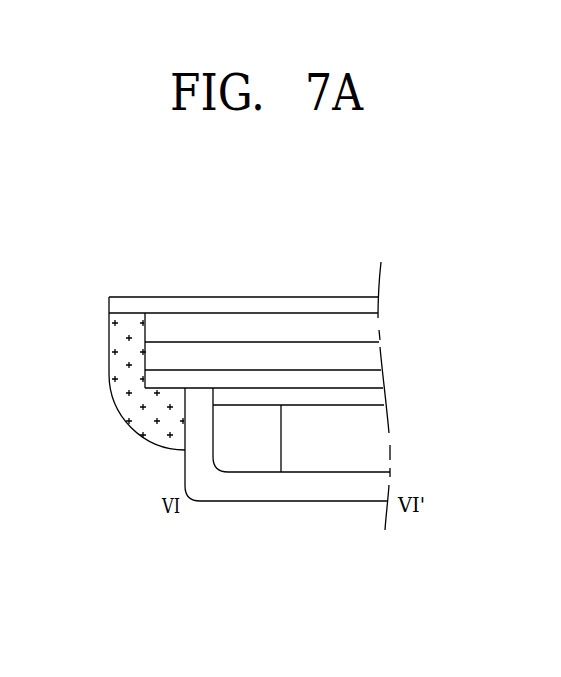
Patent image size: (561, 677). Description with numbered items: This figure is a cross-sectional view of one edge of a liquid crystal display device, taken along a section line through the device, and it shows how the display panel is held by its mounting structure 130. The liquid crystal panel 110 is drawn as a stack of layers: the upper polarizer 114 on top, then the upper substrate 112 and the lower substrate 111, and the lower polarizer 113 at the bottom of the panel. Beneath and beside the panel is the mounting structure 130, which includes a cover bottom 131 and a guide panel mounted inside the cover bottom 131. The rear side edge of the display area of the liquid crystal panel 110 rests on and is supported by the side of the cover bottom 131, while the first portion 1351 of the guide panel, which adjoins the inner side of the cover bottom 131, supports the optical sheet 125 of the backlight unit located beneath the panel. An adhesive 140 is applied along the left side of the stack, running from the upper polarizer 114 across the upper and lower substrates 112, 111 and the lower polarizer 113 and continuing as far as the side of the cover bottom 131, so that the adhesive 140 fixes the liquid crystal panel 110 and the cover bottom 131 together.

The liquid crystal panel 110 is at (318, 240).
The upper polarizer 114 is at (156, 305).
The upper substrate 112 is at (197, 330).
The lower substrate 111 is at (241, 355).
The lower polarizer 113 is at (286, 380).
The adhesive 140 is at (117, 351).
The optical sheet 125 is at (372, 397).
The mounting structure 130 is at (295, 547).
The cover bottom 131 is at (200, 485).
The first portion 1351 is at (268, 458).